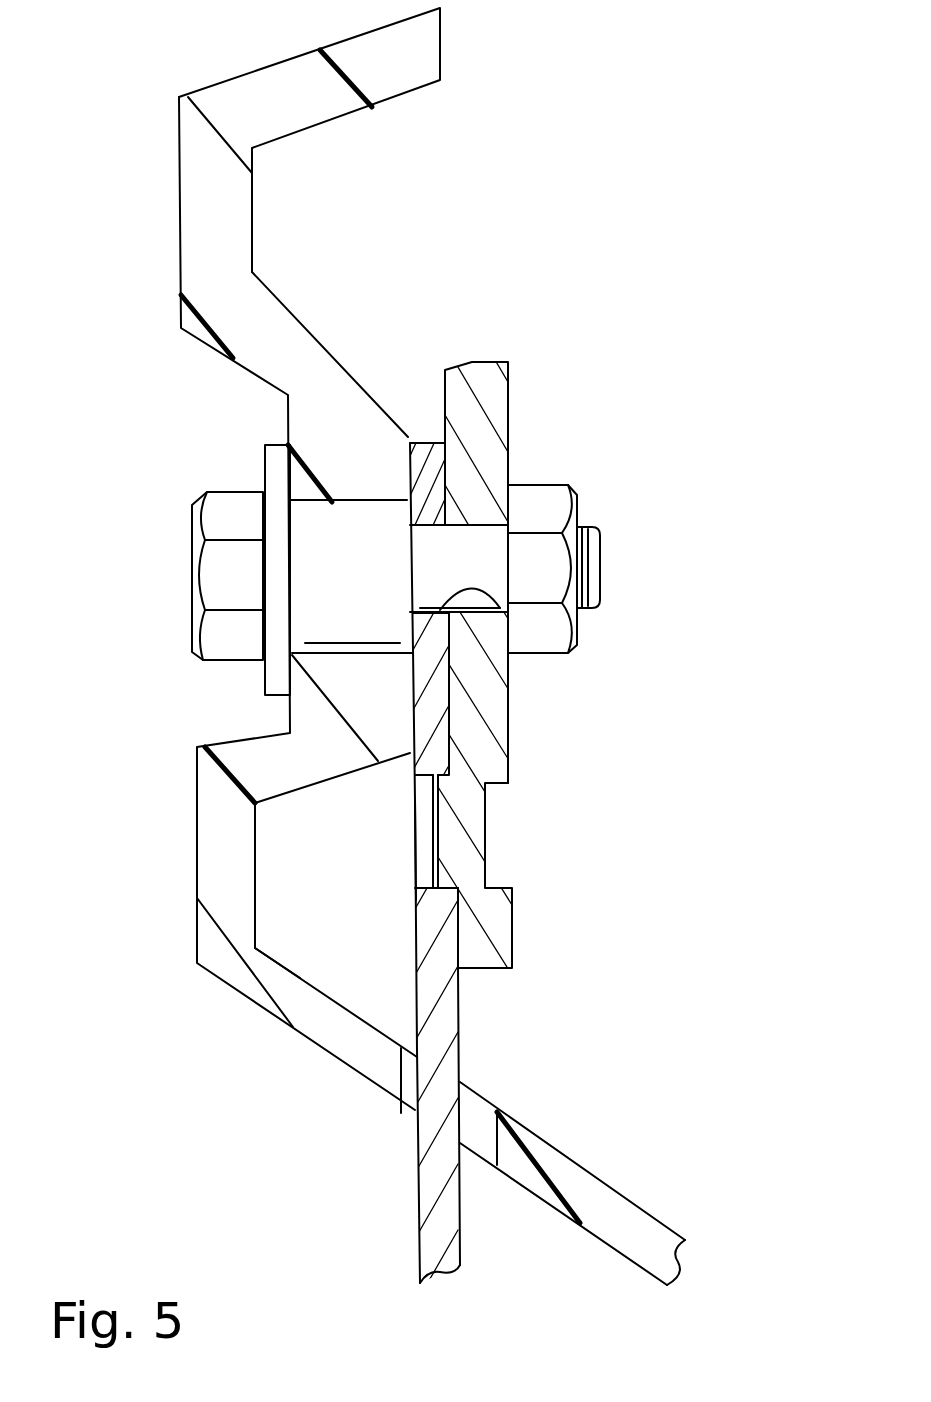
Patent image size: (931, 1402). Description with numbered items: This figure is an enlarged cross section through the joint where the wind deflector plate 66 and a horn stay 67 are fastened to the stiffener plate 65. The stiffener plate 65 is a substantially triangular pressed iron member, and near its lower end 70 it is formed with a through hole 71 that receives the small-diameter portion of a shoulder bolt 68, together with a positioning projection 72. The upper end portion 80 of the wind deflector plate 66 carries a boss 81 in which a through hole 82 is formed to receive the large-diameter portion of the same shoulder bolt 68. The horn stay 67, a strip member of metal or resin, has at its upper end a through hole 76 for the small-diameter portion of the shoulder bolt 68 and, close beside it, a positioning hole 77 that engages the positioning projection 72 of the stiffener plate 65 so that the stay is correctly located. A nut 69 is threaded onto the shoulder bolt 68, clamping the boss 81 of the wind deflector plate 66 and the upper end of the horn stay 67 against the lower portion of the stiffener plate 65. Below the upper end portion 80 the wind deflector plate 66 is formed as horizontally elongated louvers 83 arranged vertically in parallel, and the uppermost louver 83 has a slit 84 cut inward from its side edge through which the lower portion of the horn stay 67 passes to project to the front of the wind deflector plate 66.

The stiffener plate 65 is at (500, 395).
The wind deflector plate 66 is at (160, 208).
The horn stay 67 is at (452, 1038).
The shoulder bolt 68 is at (214, 585).
The nut 69 is at (553, 495).
The lower end 70 is at (504, 970).
The through hole 71 is at (476, 527).
The positioning projection 72 is at (438, 800).
The through hole 76 is at (511, 616).
The positioning hole 77 is at (415, 853).
The upper end portion 80 is at (371, 41).
The boss 81 is at (346, 418).
The through hole 82 is at (262, 649).
The louver 83 is at (303, 1038).
The slit 84 is at (412, 1098).